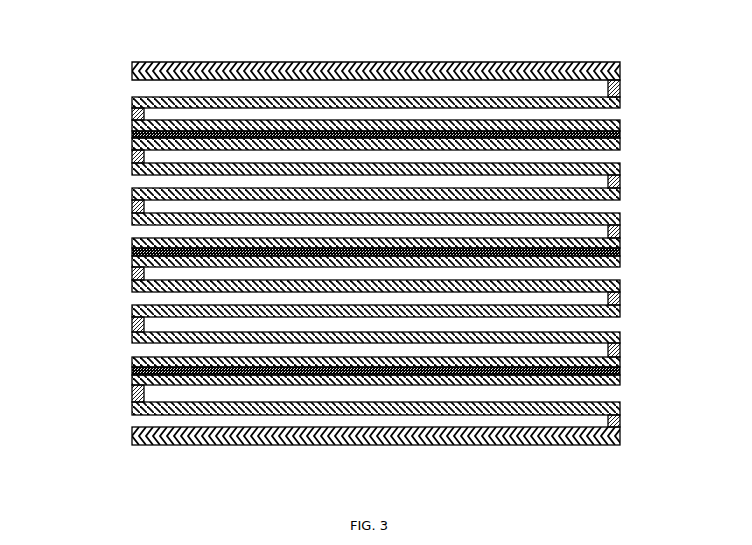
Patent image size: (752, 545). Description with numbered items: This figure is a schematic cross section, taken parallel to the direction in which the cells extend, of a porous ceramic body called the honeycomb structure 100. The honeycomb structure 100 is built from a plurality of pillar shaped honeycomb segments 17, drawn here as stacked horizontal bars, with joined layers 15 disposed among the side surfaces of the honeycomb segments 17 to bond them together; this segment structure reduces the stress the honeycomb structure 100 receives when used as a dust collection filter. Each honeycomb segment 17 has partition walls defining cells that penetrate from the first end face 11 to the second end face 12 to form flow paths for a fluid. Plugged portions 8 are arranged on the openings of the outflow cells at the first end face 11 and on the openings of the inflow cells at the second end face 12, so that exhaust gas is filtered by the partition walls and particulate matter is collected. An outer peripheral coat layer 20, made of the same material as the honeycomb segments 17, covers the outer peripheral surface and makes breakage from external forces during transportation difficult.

The honeycomb structure 100 is at (671, 31).
The outer peripheral coat layer 20 is at (336, 62).
The first end face 11 is at (133, 80).
The second end face 12 is at (621, 75).
The joined layer 15 is at (621, 134).
The pillar shaped honeycomb segment 17 is at (124, 155).
The plugged portion 8 is at (132, 328).